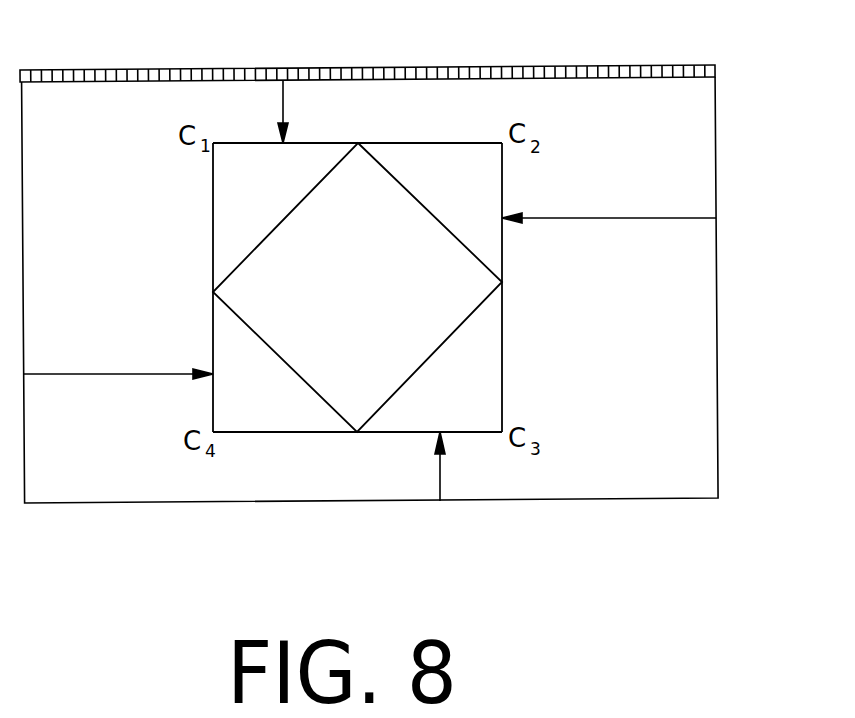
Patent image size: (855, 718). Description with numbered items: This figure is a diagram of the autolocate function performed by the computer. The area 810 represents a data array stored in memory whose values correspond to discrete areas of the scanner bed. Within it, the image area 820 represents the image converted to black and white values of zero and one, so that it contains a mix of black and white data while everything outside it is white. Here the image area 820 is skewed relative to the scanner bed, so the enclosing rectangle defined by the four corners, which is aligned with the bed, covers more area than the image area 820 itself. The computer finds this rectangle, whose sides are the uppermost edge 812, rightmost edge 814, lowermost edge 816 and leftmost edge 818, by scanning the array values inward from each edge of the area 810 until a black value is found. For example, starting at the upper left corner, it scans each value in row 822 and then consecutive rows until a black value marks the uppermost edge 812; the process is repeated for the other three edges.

The area 810 is at (495, 64).
The row 822 is at (715, 70).
The uppermost edge 812 is at (415, 140).
The rightmost edge 814 is at (502, 308).
The lowermost edge 816 is at (275, 433).
The leftmost edge 818 is at (213, 197).
The image area 820 is at (408, 190).